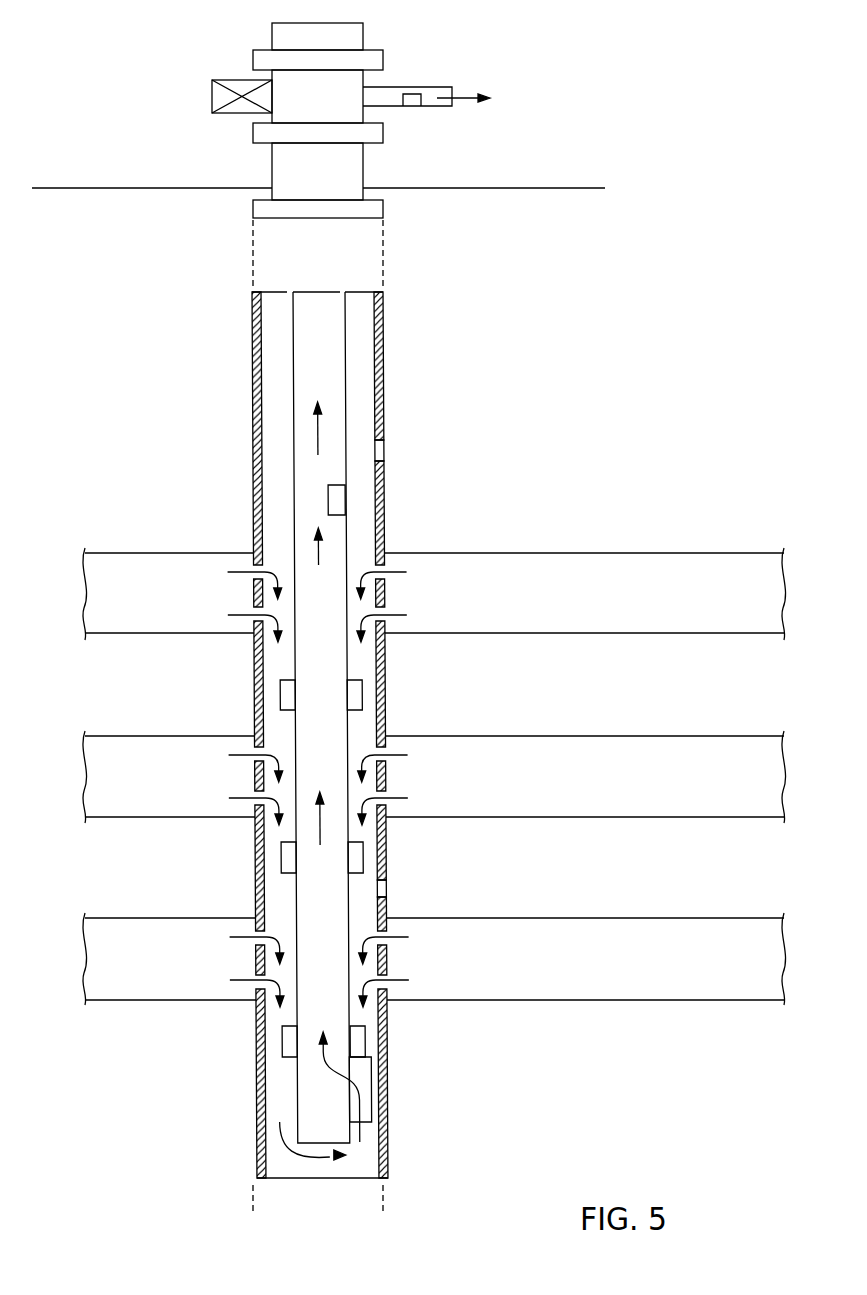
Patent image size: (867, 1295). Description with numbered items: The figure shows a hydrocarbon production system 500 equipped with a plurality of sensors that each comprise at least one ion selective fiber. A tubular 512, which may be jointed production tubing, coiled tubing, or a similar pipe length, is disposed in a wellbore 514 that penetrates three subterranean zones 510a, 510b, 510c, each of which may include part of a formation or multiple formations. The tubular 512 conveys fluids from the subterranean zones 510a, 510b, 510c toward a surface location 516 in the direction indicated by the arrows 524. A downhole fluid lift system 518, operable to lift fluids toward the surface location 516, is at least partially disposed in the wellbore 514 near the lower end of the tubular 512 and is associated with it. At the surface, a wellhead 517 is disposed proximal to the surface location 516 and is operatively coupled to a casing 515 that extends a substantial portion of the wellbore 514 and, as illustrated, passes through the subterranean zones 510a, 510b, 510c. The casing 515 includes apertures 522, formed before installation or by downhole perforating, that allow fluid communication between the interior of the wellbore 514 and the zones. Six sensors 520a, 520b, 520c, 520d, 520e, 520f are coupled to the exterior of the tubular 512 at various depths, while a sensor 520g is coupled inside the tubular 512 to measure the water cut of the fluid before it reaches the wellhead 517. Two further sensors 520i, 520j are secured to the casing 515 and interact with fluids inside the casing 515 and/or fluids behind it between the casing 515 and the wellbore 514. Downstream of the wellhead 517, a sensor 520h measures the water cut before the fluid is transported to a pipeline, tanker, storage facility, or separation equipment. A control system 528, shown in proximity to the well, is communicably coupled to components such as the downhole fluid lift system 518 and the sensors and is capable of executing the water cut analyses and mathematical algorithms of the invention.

The hydrocarbon production system 500 is at (606, 517).
The subterranean zone 510a is at (729, 611).
The subterranean zone 510b is at (729, 794).
The subterranean zone 510c is at (729, 977).
The tubular 512 is at (347, 340).
The wellbore 514 is at (253, 375).
The casing 515 is at (253, 503).
The surface location 516 is at (574, 186).
The wellhead 517 is at (363, 81).
The downhole fluid lift system 518 is at (372, 1102).
The sensor 520a is at (283, 703).
The sensor 520b is at (363, 700).
The sensor 520c is at (283, 865).
The sensor 520d is at (363, 862).
The sensor 520e is at (285, 1048).
The sensor 520f is at (366, 1045).
The sensor 520g is at (340, 498).
The sensor 520h is at (413, 106).
The sensor 520i is at (385, 450).
The sensor 520j is at (385, 887).
The apertures 522 is at (253, 568).
The arrows 524 is at (317, 441).
The control system 528 is at (212, 95).